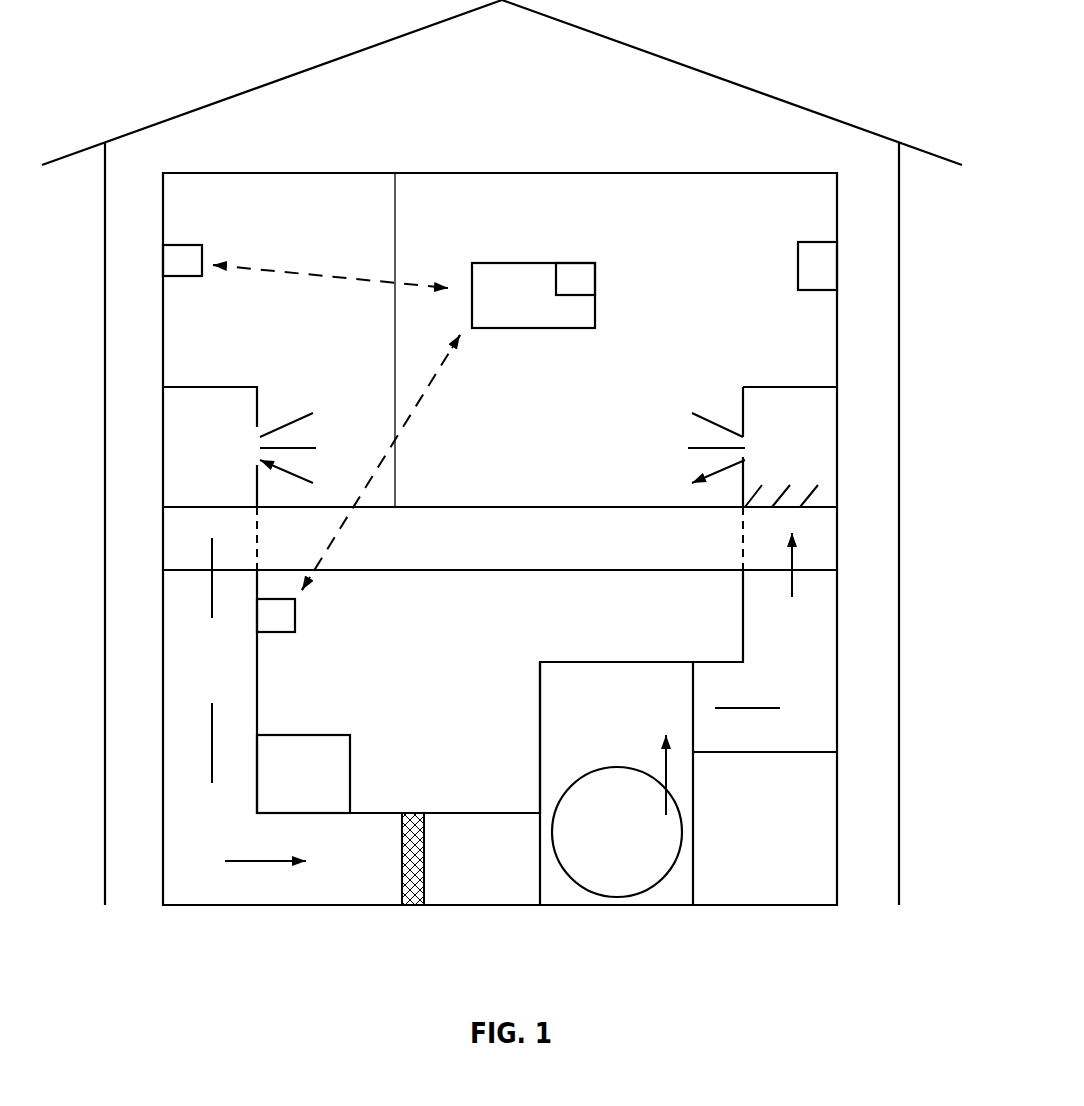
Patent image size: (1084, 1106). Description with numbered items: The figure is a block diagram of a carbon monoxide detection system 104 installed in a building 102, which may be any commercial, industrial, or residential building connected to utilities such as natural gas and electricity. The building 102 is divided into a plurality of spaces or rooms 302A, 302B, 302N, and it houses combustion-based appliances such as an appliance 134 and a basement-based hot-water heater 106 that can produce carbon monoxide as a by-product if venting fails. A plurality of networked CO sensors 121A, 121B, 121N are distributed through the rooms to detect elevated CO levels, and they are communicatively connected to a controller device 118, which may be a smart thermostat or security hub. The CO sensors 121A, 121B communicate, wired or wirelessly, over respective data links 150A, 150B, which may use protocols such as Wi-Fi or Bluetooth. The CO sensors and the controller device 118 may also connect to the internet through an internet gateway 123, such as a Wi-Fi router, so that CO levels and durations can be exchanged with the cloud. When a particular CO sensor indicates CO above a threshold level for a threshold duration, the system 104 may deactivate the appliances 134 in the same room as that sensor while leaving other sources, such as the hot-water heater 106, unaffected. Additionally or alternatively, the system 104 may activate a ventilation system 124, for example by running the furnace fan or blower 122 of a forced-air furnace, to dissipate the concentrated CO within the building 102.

The building 102 is at (695, 68).
The CO detection system 104 is at (786, 945).
The hot-water heater 106 is at (693, 850).
The controller device 118 is at (486, 263).
The CO sensor 121A is at (190, 245).
The CO sensor 121B is at (280, 632).
The CO sensor 121N is at (580, 263).
The furnace fan or blower 122 is at (610, 768).
The internet gateway 123 is at (812, 242).
The ventilation system 124 is at (805, 455).
The appliance 134 is at (320, 789).
The data link 150A is at (357, 282).
The data link 150B is at (410, 412).
The room 302A is at (216, 199).
The room 302B is at (447, 199).
The room 302N is at (465, 599).